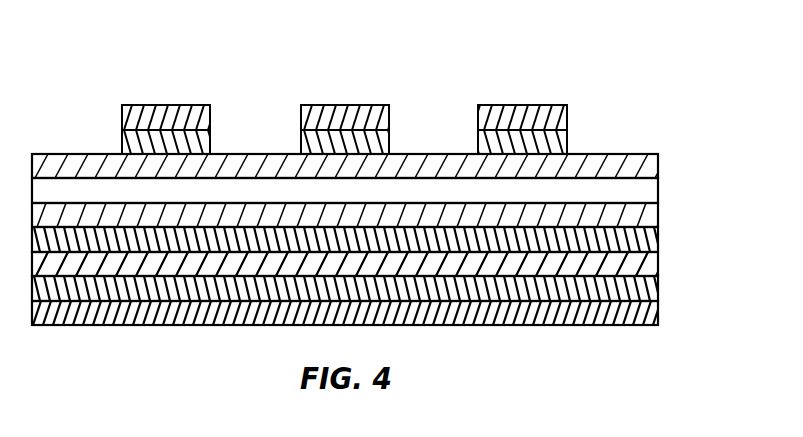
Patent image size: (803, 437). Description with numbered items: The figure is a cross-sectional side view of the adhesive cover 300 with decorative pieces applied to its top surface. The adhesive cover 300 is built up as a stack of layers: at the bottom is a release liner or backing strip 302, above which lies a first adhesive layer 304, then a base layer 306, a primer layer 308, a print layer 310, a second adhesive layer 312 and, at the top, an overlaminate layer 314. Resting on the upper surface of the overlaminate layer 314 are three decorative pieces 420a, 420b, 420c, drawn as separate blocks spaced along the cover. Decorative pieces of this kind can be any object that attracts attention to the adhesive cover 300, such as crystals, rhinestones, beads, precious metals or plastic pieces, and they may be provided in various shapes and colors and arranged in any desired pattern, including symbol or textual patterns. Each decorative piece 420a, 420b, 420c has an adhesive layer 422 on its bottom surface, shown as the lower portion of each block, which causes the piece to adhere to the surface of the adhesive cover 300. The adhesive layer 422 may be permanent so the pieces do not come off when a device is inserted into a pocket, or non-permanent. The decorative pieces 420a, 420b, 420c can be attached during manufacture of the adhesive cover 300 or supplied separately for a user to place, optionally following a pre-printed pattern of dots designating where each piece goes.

The adhesive cover 300 is at (474, 56).
The release liner or backing strip 302 is at (659, 314).
The first adhesive layer 304 is at (659, 290).
The base layer 306 is at (659, 265).
The primer layer 308 is at (659, 240).
The print layer 310 is at (659, 216).
The second adhesive layer 312 is at (659, 191).
The overlaminate layer 314 is at (659, 166).
The decorative piece 420a is at (165, 105).
The decorative piece 420b is at (343, 105).
The decorative piece 420c is at (522, 106).
The adhesive layer 422 is at (568, 143).